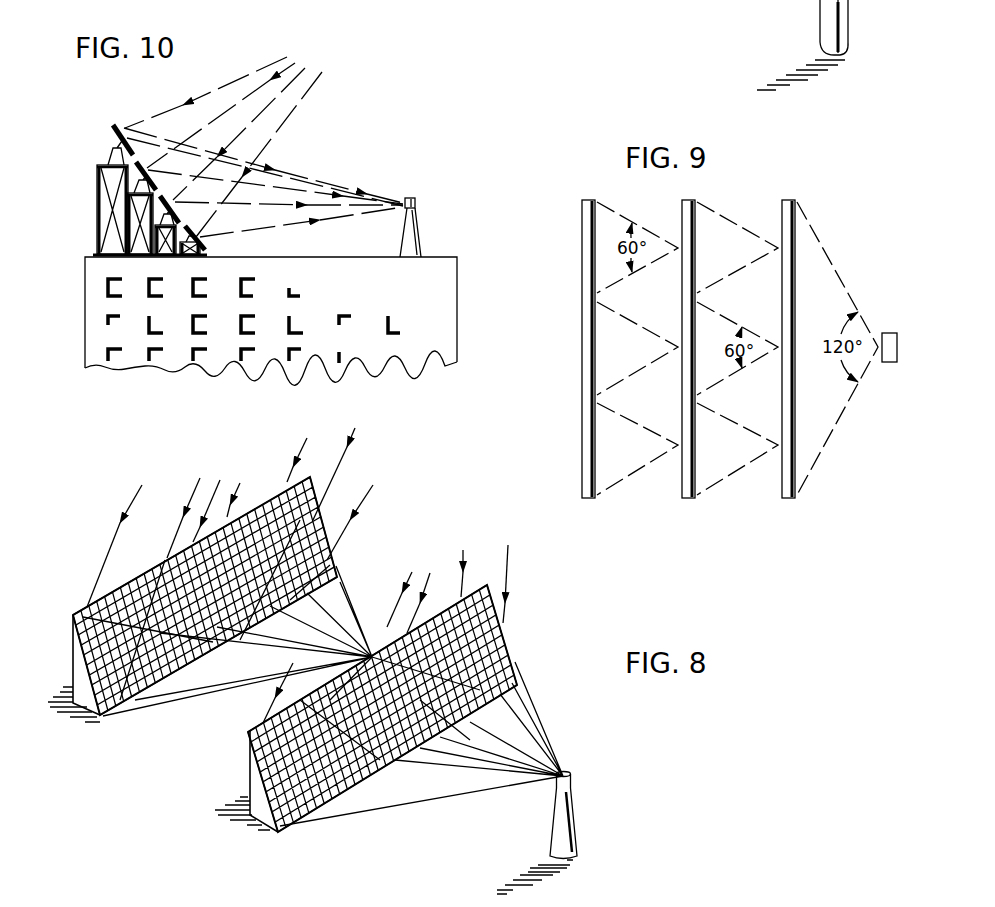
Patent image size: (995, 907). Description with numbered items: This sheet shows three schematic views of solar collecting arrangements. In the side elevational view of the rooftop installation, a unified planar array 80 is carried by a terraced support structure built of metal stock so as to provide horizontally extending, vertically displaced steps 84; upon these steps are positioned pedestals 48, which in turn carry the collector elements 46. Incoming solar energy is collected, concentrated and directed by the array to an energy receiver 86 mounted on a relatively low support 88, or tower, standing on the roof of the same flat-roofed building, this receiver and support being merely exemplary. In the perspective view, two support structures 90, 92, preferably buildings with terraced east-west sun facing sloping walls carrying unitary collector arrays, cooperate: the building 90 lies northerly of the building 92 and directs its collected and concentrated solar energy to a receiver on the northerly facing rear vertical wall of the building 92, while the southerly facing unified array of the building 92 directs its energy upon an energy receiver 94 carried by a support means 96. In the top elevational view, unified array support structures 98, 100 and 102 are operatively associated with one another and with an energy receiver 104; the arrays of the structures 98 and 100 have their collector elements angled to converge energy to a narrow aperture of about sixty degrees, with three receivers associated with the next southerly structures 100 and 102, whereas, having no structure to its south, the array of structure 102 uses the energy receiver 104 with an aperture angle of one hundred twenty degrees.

In FIG. 10, the collector elements 46 is at (115, 126).
In FIG. 10, the pedestals 48 is at (112, 148).
In FIG. 10, the unified planar array 80 is at (130, 121).
In FIG. 10, the steps 84 is at (100, 165).
In FIG. 10, the energy receiver 86 is at (415, 203).
In FIG. 10, the support 88 is at (415, 223).
In FIG. 9, the unified array support structure 98 is at (588, 500).
In FIG. 9, the unified array support structure 100 is at (688, 500).
In FIG. 9, the unified array support structure 102 is at (793, 500).
In FIG. 9, the energy receiver 104 is at (892, 333).
In FIG. 8, the support structure 90 is at (75, 655).
In FIG. 8, the support structure 92 is at (250, 765).
In FIG. 8, the energy receiver 94 is at (572, 779).
In FIG. 8, the support means 96 is at (570, 817).